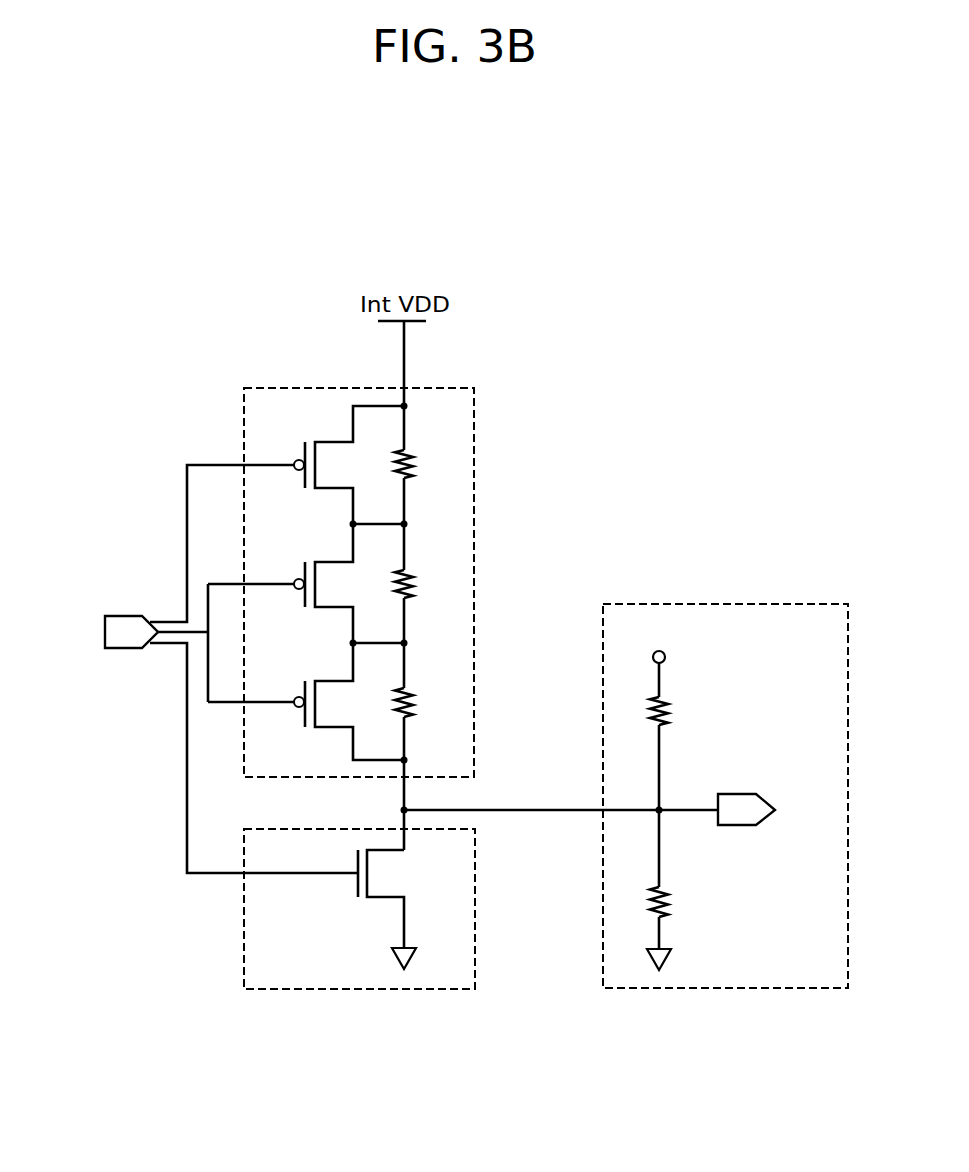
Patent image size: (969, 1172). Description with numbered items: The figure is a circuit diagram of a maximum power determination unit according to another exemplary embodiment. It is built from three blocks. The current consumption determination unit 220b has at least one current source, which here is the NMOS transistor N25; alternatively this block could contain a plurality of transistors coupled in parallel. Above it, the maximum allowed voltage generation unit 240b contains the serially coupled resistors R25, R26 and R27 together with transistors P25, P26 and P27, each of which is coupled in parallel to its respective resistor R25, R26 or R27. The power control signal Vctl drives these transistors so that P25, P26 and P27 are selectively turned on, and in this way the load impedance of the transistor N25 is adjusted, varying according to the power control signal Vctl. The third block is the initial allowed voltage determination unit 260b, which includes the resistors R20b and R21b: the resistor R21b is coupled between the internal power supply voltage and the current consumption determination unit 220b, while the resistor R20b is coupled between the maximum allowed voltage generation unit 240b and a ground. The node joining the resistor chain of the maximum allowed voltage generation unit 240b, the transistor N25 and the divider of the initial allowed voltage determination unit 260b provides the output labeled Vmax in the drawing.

The maximum allowed voltage generation unit 240b is at (474, 533).
The current consumption determination unit 220b is at (475, 907).
The initial allowed voltage determination unit 260b is at (725, 602).
The transistor P25 is at (332, 465).
The transistor P26 is at (332, 583).
The transistor P27 is at (332, 701).
The resistor R25 is at (430, 465).
The resistor R26 is at (430, 584).
The resistor R27 is at (430, 702).
The NMOS transistor N25 is at (404, 909).
The resistor R21b is at (691, 711).
The resistor R20b is at (691, 902).
The power control signal Vctl is at (203, 669).
The maximum voltage output Vmax is at (780, 809).